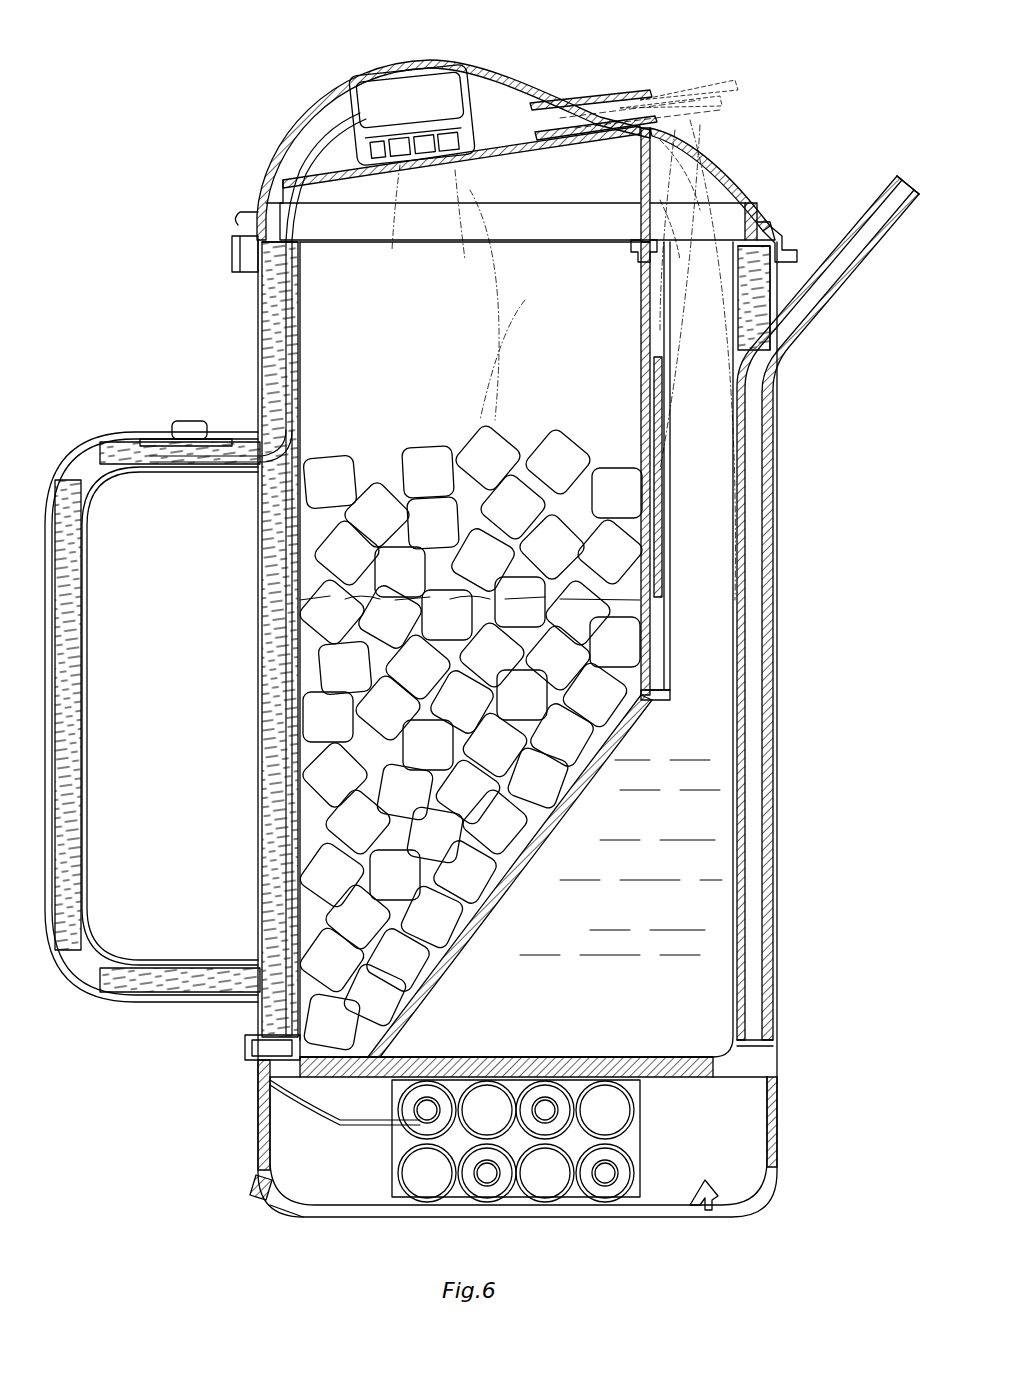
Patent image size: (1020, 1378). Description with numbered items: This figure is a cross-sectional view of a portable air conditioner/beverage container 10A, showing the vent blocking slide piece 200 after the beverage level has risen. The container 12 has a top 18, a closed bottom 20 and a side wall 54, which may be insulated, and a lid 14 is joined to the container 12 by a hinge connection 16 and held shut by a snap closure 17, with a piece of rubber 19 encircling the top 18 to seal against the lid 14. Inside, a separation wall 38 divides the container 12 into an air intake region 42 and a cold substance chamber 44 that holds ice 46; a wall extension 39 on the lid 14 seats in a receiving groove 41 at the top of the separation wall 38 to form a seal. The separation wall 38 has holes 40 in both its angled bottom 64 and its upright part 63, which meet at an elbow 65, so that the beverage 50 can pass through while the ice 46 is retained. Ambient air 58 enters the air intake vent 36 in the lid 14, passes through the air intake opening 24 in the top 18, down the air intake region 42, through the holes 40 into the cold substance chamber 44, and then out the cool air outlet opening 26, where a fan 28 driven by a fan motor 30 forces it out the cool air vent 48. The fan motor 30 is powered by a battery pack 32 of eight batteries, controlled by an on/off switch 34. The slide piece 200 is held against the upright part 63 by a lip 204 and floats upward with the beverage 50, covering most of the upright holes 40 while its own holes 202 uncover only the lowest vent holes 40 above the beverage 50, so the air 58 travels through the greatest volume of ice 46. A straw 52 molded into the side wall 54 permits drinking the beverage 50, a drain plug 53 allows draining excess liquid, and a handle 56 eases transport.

The portable air conditioner/beverage container 10A is at (146, 46).
The container 12 is at (252, 325).
The lid 14 is at (310, 95).
The hinge connection 16 is at (233, 258).
The snap closure 17 is at (785, 250).
The top 18 is at (553, 240).
The piece of rubber 19 is at (760, 232).
The bottom 20 is at (524, 1057).
The air intake opening 24 is at (678, 258).
The cool air outlet opening 26 is at (487, 257).
The fan 28 is at (478, 130).
The fan motor 30 is at (388, 96).
The battery pack 32 is at (425, 1173).
The on/off switch 34 is at (190, 422).
The air intake vent 36 is at (722, 168).
The separation wall 38 is at (650, 314).
The wall extension 39 is at (641, 152).
The holes 40 is at (648, 592).
The receiving groove 41 is at (641, 248).
The air intake region 42 is at (717, 435).
The cold substance chamber 44 is at (325, 742).
The ice 46 is at (456, 737).
The cool air vent 48 is at (655, 100).
The beverage 50 is at (713, 600).
The straw 52 is at (892, 192).
The drain plug 53 is at (248, 1046).
The side wall 54 is at (272, 296).
The handle 56 is at (92, 652).
The air 58 is at (521, 305).
The upright part 63 is at (660, 392).
The bottom 64 is at (487, 903).
The elbow 65 is at (660, 692).
The vent blocking slide piece 200 is at (658, 437).
The holes 202 is at (657, 540).
The lip 204 is at (680, 210).